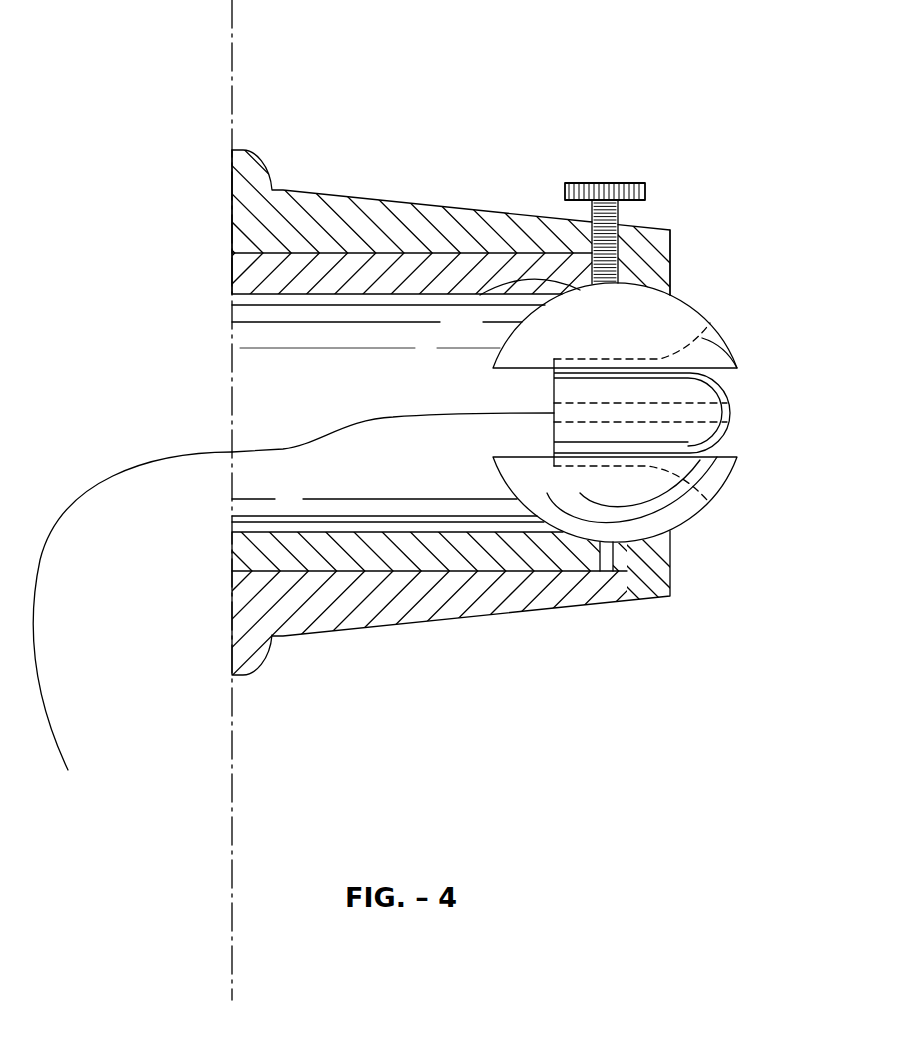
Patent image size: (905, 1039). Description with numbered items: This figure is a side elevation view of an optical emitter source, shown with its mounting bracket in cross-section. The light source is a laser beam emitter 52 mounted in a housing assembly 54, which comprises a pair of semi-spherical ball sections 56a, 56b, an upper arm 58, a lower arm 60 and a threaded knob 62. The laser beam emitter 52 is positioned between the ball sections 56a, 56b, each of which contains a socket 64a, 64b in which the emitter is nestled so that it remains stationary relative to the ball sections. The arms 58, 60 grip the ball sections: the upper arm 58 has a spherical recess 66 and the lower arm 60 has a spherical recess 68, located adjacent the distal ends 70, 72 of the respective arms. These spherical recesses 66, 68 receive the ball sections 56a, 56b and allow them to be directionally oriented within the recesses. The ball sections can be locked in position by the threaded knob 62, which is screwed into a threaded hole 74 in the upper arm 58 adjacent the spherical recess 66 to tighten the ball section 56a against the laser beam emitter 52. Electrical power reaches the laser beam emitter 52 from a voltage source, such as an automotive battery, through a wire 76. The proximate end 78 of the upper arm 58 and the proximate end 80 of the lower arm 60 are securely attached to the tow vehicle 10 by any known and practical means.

The tow vehicle 10 is at (232, 58).
The laser beam emitter 52 is at (732, 410).
The housing assembly 54 is at (376, 114).
The semi-spherical ball section 56a is at (700, 317).
The semi-spherical ball section 56b is at (698, 515).
The upper arm 58 is at (660, 247).
The lower arm 60 is at (670, 597).
The threaded knob 62 is at (619, 183).
The socket 64a is at (710, 323).
The socket 64b is at (707, 500).
The spherical recess 66 is at (485, 293).
The spherical recess 68 is at (627, 545).
The distal end 70 is at (686, 258).
The distal end 72 is at (695, 568).
The threaded hole 74 is at (632, 225).
The wire 76 is at (392, 418).
The proximate end 78 is at (204, 211).
The proximate end 80 is at (213, 600).